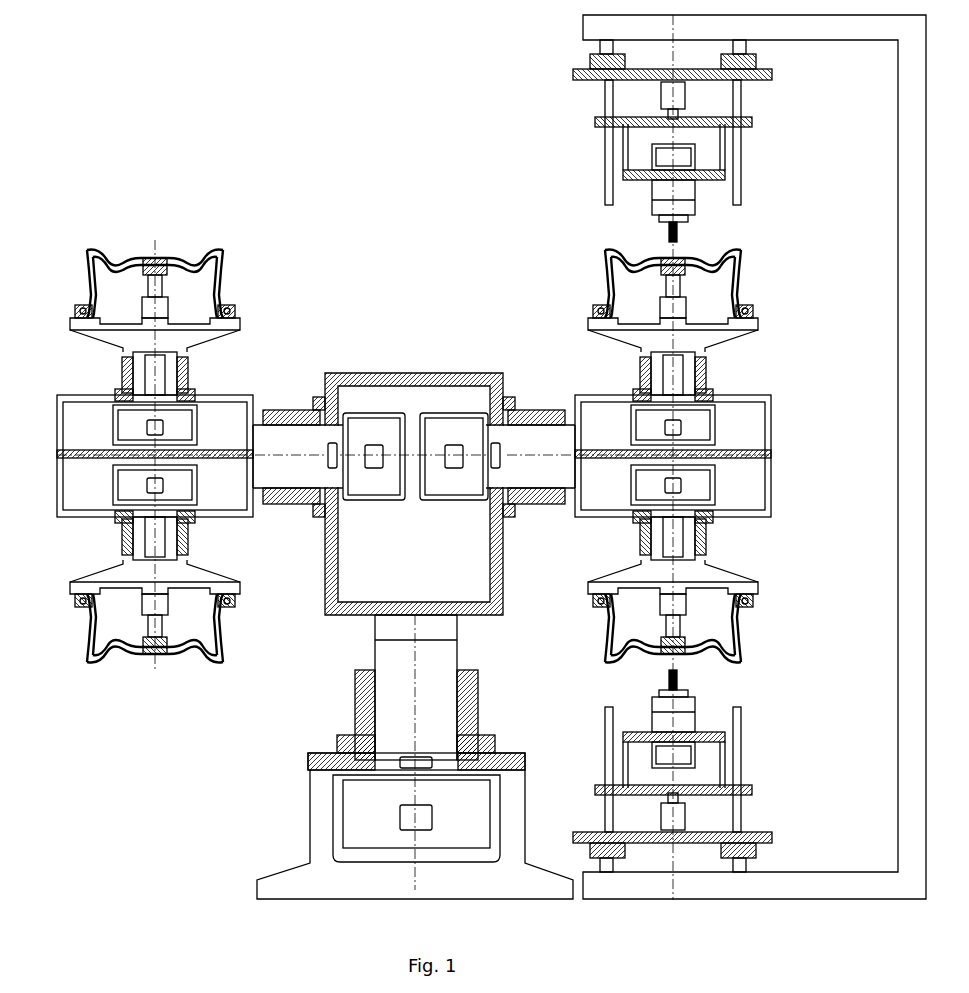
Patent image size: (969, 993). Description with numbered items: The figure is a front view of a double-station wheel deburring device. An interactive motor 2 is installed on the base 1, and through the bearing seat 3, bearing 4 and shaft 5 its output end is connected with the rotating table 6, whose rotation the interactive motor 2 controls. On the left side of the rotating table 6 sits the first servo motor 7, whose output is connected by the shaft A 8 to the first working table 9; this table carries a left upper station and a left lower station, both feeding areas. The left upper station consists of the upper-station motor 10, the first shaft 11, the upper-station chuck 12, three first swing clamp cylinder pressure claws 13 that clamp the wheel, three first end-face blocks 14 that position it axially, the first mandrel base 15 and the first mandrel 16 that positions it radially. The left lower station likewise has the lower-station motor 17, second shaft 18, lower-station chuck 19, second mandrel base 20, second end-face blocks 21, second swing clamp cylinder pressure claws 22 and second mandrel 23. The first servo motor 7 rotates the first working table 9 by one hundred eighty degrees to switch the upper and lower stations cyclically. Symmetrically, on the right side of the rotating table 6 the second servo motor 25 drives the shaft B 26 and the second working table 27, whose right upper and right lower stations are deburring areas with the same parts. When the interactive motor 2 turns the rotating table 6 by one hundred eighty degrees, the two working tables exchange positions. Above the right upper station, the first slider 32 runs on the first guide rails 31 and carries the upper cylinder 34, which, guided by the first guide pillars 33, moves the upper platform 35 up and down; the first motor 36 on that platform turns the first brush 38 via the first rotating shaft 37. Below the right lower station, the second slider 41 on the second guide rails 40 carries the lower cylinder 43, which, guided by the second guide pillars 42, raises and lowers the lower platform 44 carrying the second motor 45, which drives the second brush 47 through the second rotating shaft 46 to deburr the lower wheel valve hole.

The base 1 is at (325, 863).
The interactive motor 2 is at (355, 803).
The bearing seat 3 is at (332, 763).
The bearing 4 is at (343, 737).
The shaft 5 is at (398, 673).
The rotating table 6 is at (325, 578).
The first servo motor 7 is at (357, 432).
The shaft A 8 is at (297, 433).
The first working table 9 is at (250, 427).
The upper-station motor 10 is at (120, 435).
The first shaft 11 is at (145, 388).
The upper-station chuck 12 is at (80, 328).
The first swing clamp cylinder pressure claw 13 is at (77, 310).
The first end-face block 14 is at (233, 307).
The first mandrel base 15 is at (160, 308).
The first mandrel 16 is at (175, 262).
The lower-station motor 17 is at (117, 490).
The second shaft 18 is at (148, 543).
The lower-station chuck 19 is at (143, 573).
The second mandrel base 20 is at (152, 595).
The second end-face block 21 is at (82, 593).
The second swing clamp cylinder pressure claw 22 is at (80, 607).
The second mandrel 23 is at (135, 645).
The second servo motor 25 is at (473, 435).
The shaft B 26 is at (533, 437).
The second working table 27 is at (573, 418).
The first guide rail 31 is at (605, 47).
The first slider 32 is at (578, 75).
The first guide pillar 33 is at (605, 110).
The upper cylinder 34 is at (752, 60).
The upper platform 35 is at (680, 97).
The first motor 36 is at (685, 162).
The first rotating shaft 37 is at (680, 195).
The first brush 38 is at (677, 230).
The second guide rail 40 is at (740, 862).
The second slider 41 is at (740, 828).
The second guide pillar 42 is at (740, 810).
The lower cylinder 43 is at (675, 813).
The lower platform 44 is at (675, 788).
The second motor 45 is at (683, 750).
The second rotating shaft 46 is at (677, 722).
The second brush 47 is at (675, 690).